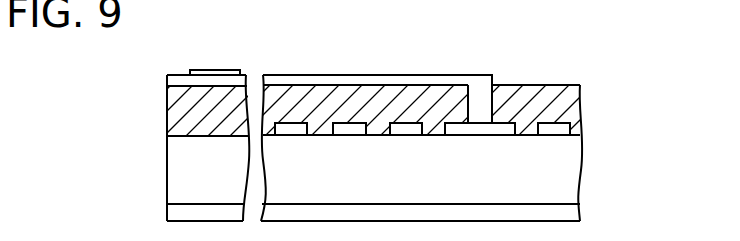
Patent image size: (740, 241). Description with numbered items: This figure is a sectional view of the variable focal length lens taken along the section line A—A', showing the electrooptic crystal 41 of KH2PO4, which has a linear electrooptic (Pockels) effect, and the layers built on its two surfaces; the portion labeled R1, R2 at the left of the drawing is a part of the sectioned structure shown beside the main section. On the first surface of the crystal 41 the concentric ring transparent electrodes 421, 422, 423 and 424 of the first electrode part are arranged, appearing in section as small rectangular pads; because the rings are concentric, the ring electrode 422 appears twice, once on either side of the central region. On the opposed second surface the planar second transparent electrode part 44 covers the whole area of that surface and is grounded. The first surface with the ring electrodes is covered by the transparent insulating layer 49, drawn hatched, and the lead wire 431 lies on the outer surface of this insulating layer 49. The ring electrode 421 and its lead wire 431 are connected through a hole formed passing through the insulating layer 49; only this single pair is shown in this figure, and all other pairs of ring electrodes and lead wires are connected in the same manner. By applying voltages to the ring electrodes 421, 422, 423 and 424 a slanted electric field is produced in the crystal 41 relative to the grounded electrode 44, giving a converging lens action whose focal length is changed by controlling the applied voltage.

The section line A—A' A is at (318, 2).
The resistor R1 is at (200, 115).
The resistor R2 is at (217, 70).
The electrooptic crystal 41 is at (570, 157).
The planar second transparent electrode part 44 is at (568, 209).
The transparent insulating layer 49 is at (565, 104).
The lead wire 431 is at (420, 75).
The ring transparent electrode 421 is at (475, 135).
The ring transparent electrode 422 is at (407, 135).
The ring transparent electrode 423 is at (350, 135).
The ring transparent electrode 424 is at (290, 135).